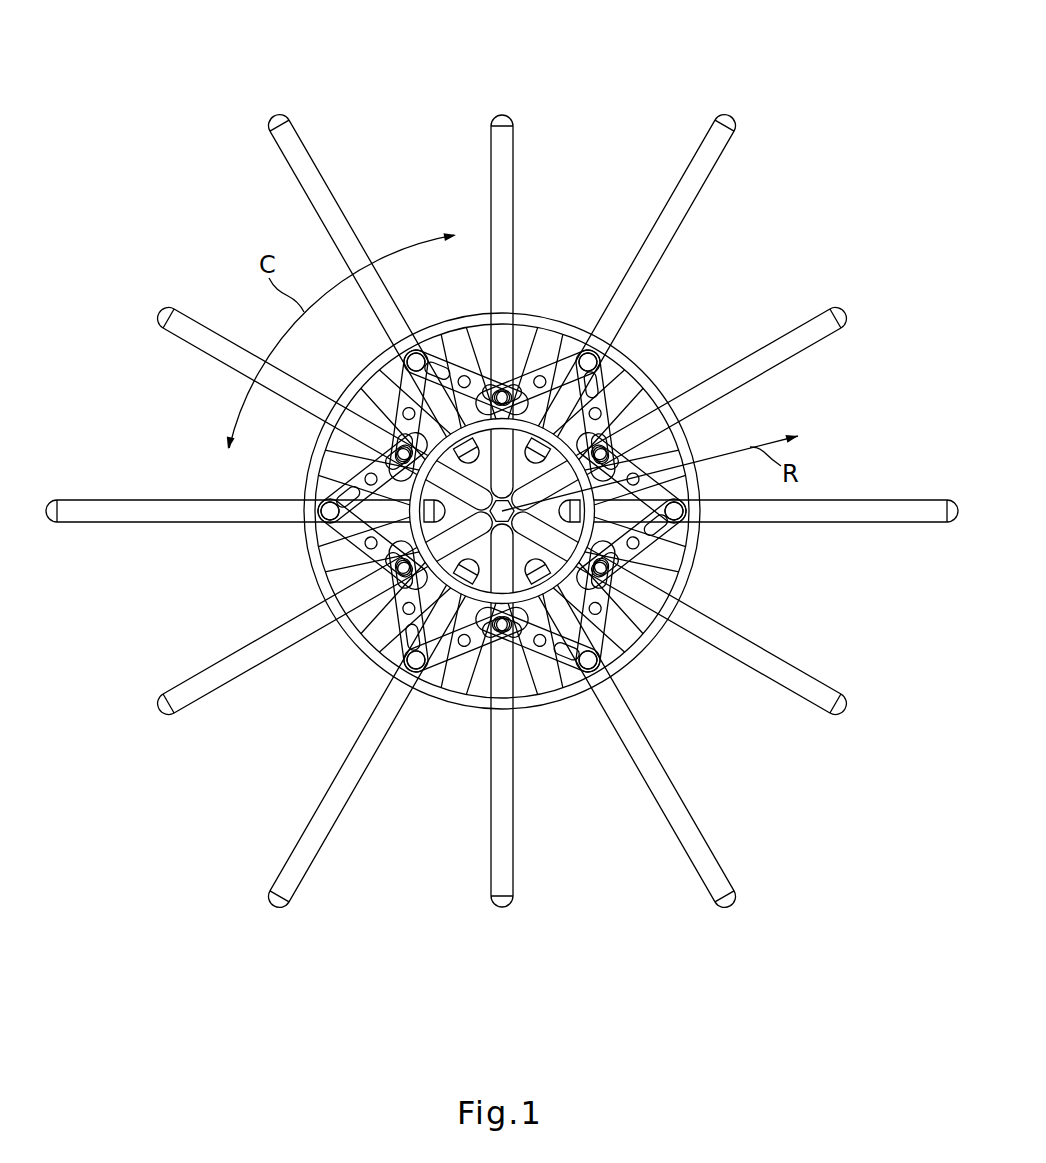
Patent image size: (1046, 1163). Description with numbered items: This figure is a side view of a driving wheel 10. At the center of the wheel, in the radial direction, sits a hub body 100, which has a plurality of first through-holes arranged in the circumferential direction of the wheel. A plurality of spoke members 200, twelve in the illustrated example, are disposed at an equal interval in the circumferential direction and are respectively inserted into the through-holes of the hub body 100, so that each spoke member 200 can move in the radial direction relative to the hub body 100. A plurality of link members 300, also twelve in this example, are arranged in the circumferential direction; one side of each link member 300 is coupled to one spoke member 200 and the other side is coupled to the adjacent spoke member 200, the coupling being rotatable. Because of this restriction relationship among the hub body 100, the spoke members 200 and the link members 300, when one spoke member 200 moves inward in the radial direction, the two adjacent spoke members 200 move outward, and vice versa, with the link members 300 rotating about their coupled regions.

The driving wheel 10 is at (608, 88).
The hub body 100 is at (628, 362).
The spoke members 200 is at (709, 177).
The link members 300 is at (598, 398).